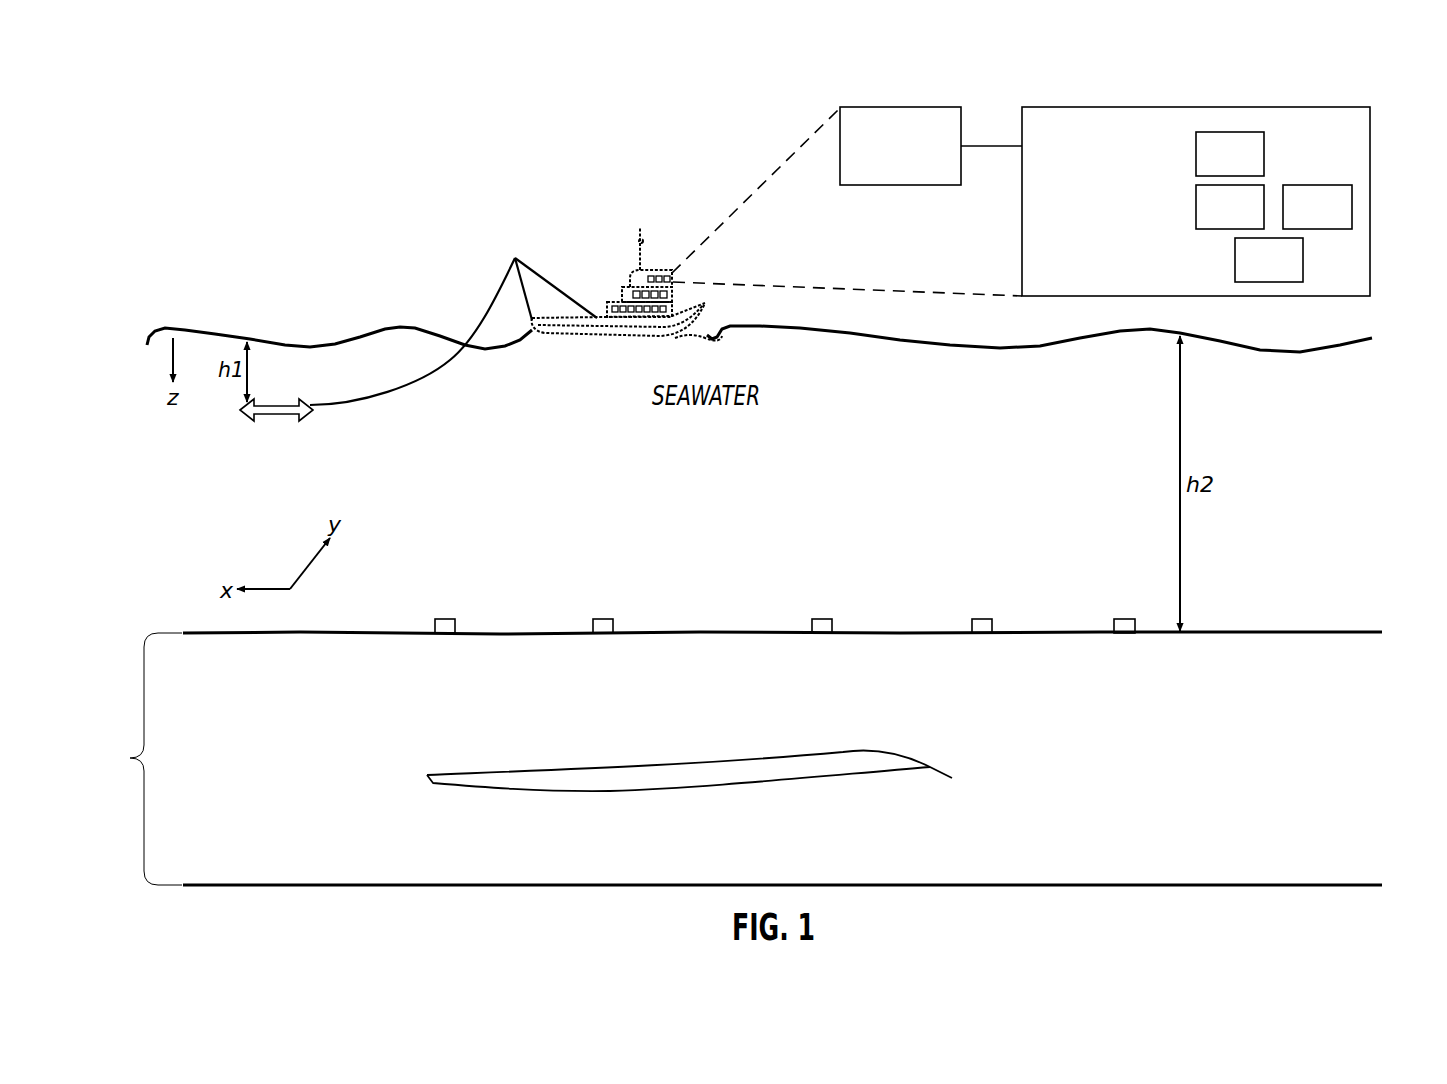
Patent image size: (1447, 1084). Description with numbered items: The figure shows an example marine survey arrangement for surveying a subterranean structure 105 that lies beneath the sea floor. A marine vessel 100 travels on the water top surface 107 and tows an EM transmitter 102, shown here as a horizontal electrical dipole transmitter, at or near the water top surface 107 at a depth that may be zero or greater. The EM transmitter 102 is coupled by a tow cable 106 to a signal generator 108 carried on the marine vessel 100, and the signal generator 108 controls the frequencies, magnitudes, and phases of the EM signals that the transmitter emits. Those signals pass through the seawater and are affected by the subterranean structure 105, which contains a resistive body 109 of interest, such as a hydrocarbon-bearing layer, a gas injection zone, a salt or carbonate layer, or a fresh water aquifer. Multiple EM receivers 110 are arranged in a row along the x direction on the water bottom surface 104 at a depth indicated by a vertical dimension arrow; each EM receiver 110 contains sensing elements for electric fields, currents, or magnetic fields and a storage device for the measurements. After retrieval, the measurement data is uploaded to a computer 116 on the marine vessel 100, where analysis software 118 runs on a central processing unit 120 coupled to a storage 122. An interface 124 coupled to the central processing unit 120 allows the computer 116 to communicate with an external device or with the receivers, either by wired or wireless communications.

The marine vessel 100 is at (683, 325).
The EM transmitter 102 is at (285, 400).
The water bottom surface 104 is at (1232, 630).
The subterranean structure 105 is at (734, 759).
The tow cable 106 is at (505, 285).
The water top surface 107 is at (373, 332).
The signal generator 108 is at (902, 107).
The resistive body 109 is at (810, 753).
The EM receivers 110 is at (443, 619).
The computer 116 is at (1117, 107).
The analysis software 118 is at (1231, 132).
The central processing unit 120 is at (1264, 205).
The storage 122 is at (1352, 205).
The interface 124 is at (1304, 260).